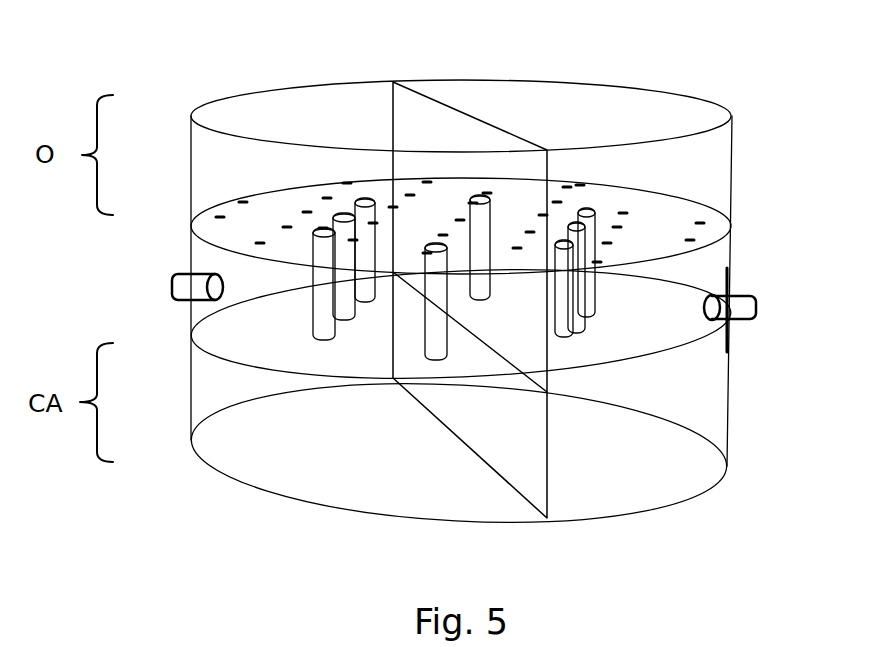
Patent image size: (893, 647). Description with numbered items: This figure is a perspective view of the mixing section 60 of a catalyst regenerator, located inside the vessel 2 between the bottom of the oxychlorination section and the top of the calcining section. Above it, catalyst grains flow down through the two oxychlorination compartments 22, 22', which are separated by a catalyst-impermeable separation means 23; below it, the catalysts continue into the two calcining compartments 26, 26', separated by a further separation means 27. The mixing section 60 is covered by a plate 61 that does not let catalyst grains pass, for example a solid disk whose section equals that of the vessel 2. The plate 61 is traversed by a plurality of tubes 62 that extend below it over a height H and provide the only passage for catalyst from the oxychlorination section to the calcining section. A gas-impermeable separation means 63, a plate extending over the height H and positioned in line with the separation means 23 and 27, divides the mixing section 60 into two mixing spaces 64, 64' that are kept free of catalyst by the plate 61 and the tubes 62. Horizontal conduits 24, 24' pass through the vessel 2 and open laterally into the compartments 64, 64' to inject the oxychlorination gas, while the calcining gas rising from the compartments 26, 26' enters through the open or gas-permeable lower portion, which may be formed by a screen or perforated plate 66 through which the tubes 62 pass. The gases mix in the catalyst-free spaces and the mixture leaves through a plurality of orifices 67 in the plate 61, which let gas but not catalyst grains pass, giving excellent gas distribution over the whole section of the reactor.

The vessel 2 is at (735, 152).
The oxychlorination compartment 22 is at (291, 52).
The oxychlorination compartment 22' is at (612, 51).
The separation means 23 is at (458, 122).
The conduit 24 is at (173, 264).
The conduit 24' is at (775, 299).
The calcining compartment 26 is at (306, 541).
The calcining compartment 26' is at (653, 526).
The separation means 27 is at (487, 420).
The mixing section 60 is at (113, 220).
The plate 61 is at (660, 213).
The tubes 62 is at (570, 307).
The separation means 63 is at (515, 325).
The mixing compartment 64 is at (196, 417).
The mixing compartment 64' is at (731, 358).
The plate 66 is at (650, 358).
The orifices 67 is at (628, 210).